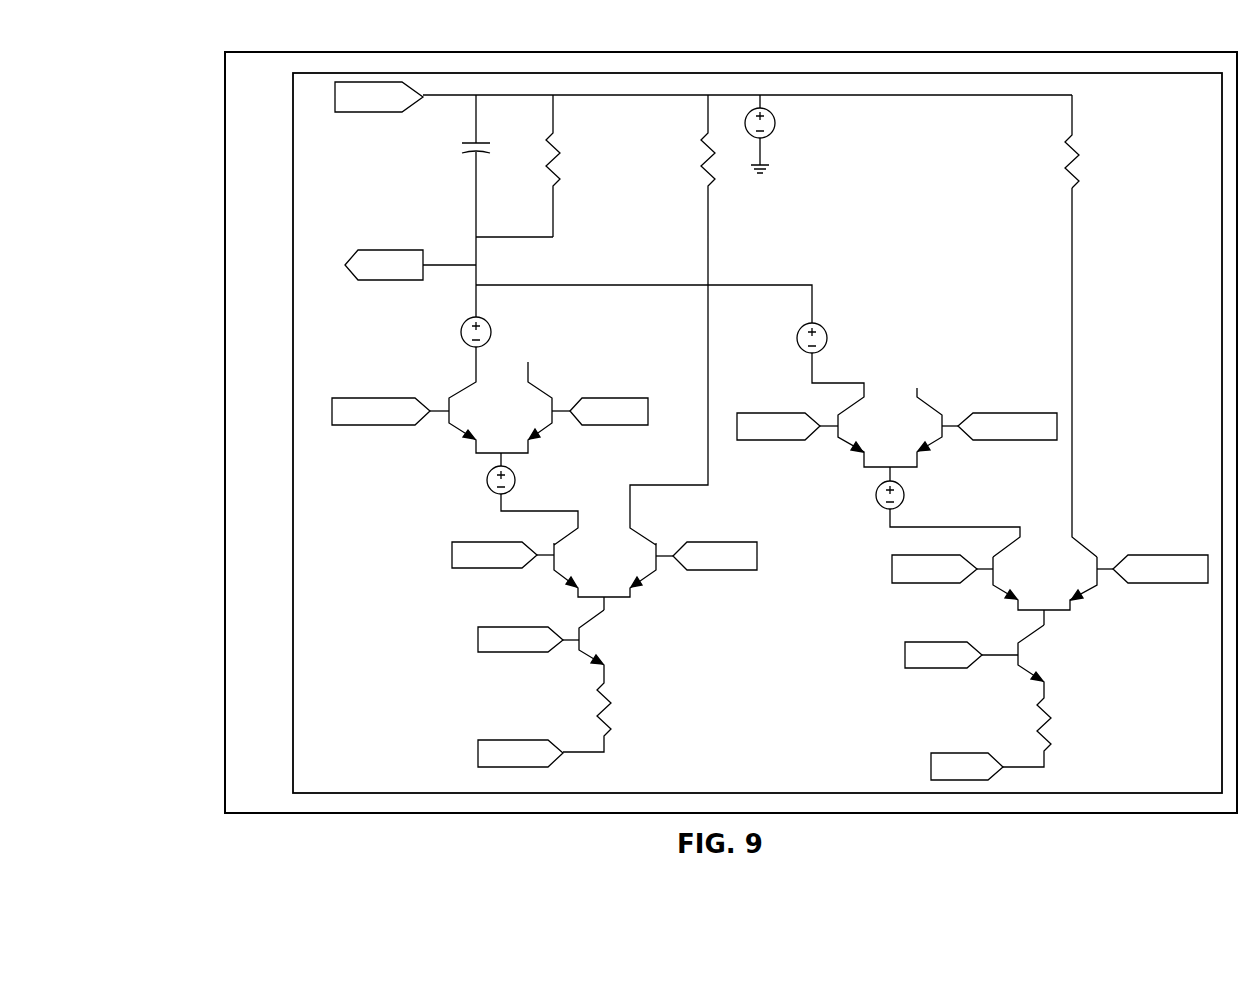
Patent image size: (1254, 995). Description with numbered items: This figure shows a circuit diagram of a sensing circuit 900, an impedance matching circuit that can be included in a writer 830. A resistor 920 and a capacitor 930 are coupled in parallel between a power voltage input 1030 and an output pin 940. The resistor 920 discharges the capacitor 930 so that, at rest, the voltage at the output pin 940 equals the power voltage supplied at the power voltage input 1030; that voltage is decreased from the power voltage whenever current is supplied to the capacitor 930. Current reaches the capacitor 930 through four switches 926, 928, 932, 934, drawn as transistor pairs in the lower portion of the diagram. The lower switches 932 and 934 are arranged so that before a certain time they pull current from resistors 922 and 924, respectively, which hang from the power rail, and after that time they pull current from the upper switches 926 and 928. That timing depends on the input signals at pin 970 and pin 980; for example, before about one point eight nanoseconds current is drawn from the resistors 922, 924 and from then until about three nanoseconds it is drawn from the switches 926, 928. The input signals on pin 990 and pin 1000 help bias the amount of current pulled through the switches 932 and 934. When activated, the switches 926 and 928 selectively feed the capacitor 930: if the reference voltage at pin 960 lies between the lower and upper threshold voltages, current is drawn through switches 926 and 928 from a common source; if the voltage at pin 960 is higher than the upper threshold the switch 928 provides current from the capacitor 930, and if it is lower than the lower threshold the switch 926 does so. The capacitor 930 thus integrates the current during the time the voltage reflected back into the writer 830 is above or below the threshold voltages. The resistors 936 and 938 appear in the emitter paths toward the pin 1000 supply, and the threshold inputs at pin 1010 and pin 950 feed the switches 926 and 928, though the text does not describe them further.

The writer 830 is at (222, 153).
The sensing circuit 900 is at (288, 395).
The resistor 920 is at (560, 160).
The resistor 922 is at (705, 150).
The resistor 924 is at (1078, 160).
The switch 926 is at (500, 379).
The switch 928 is at (869, 395).
The capacitor 930 is at (468, 146).
The switch 932 is at (605, 576).
The switch 934 is at (1045, 590).
The resistor 936 is at (605, 714).
The resistor 938 is at (1046, 700).
The output pin 940 is at (378, 250).
The input terminal OUTP2OU 950 is at (1000, 413).
The pin 960 is at (615, 398).
The pin 970 is at (452, 556).
The pin 980 is at (730, 572).
The pin 990 is at (478, 640).
The pin 1000 is at (478, 753).
The input terminal OUTN2OU 1010 is at (355, 426).
The power voltage input 1030 is at (352, 113).